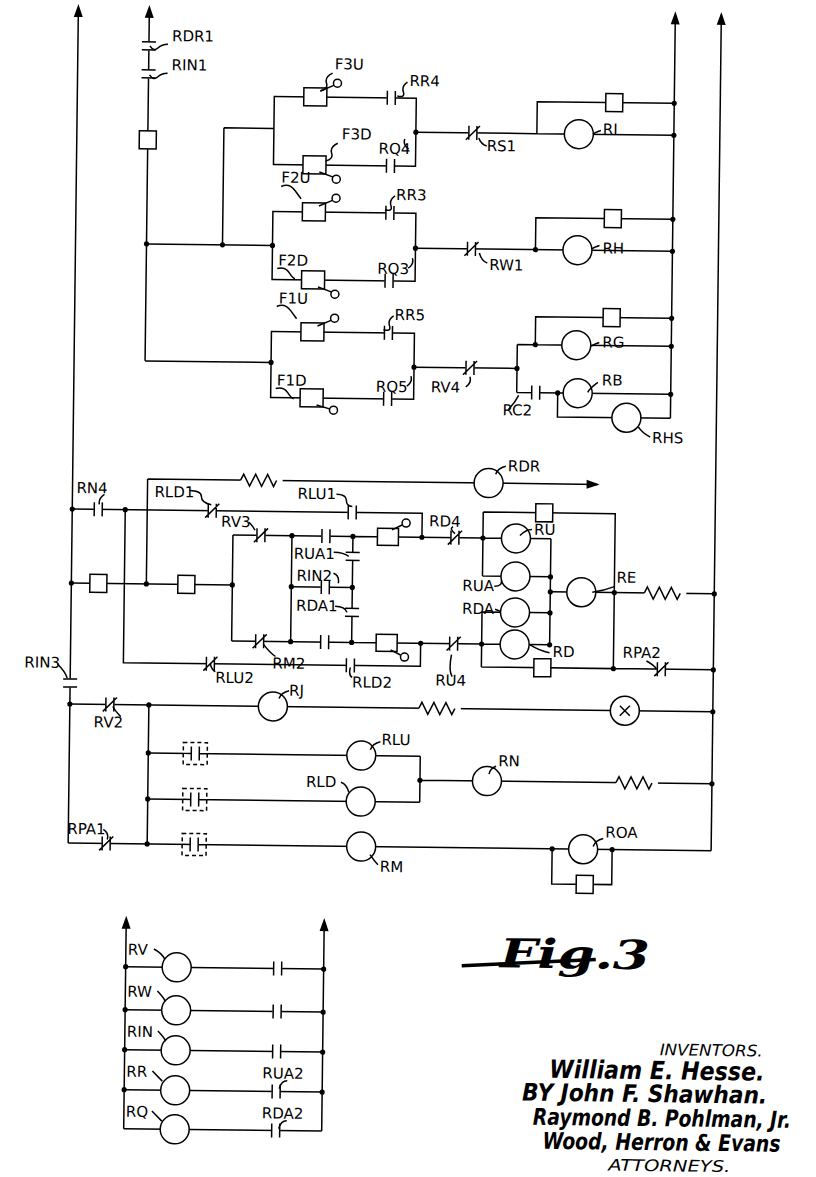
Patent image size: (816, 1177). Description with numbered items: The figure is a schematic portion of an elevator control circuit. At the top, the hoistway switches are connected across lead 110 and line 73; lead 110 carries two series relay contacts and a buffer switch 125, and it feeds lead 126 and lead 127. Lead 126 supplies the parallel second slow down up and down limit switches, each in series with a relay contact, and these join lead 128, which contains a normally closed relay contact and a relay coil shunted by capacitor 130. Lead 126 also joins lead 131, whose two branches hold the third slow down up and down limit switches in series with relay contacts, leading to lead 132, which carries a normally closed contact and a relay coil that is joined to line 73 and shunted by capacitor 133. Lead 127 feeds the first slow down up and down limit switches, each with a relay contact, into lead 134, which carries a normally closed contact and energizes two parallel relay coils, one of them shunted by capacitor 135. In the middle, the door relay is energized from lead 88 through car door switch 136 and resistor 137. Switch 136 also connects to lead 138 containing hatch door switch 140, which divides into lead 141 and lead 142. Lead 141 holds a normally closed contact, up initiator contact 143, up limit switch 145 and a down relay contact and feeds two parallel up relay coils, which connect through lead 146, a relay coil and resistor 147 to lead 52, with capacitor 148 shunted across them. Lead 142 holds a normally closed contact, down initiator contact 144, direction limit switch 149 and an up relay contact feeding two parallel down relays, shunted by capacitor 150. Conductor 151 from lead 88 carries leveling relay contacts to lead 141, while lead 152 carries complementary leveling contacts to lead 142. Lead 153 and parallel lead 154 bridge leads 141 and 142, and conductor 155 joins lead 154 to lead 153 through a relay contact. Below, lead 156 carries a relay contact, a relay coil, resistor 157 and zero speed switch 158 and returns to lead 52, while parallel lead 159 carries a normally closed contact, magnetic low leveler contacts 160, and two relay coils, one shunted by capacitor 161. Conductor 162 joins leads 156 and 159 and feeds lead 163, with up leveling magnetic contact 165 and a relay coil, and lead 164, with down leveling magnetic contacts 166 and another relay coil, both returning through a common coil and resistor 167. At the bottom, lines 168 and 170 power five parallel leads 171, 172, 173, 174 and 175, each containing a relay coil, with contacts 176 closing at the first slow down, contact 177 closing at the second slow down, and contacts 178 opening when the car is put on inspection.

The lead 88 is at (74, 28).
The lead 110 is at (144, 26).
The line 73 is at (670, 44).
The lead 52 is at (717, 40).
The buffer switch 125 is at (135, 142).
The lead 126 is at (187, 247).
The lead 127 is at (172, 364).
The lead 128 is at (434, 248).
The capacitor 130 is at (609, 208).
The lead 131 is at (248, 130).
The lead 132 is at (451, 131).
The capacitor 133 is at (610, 92).
The lead 134 is at (434, 367).
The capacitor 135 is at (610, 308).
The car door switch 136 is at (102, 578).
The resistor 137 is at (271, 481).
The lead 138 is at (179, 583).
The hatch door switch 140 is at (188, 596).
The lead 141 is at (236, 537).
The lead 142 is at (250, 636).
The up initiator contact 143 is at (324, 530).
The down initiator contact 144 is at (320, 642).
The up limit switch 145 is at (385, 546).
The lead 146 is at (552, 576).
The resistor 147 is at (670, 588).
The capacitor 148 is at (548, 509).
The direction limit switch 149 is at (388, 640).
The capacitor 150 is at (549, 678).
The conductor 151 is at (137, 509).
The lead 152 is at (168, 666).
The lead 153 is at (290, 560).
The parallel lead 154 is at (357, 612).
The conductor 155 is at (290, 589).
The lead 156 is at (99, 710).
The resistor 157 is at (454, 708).
The zero speed switch 158 is at (637, 704).
The lead 159 is at (125, 848).
The magnetic low leveler contacts 160 is at (203, 858).
The capacitor 161 is at (584, 894).
The conductor 162 is at (168, 770).
The lead 163 is at (164, 764).
The lead 164 is at (164, 809).
The up leveling magnetic contact 165 is at (205, 749).
The down leveling magnetic contact 166 is at (205, 796).
The resistor 167 is at (648, 778).
The line 168 is at (130, 948).
The line 170 is at (332, 951).
The lead 171 is at (216, 969).
The lead 172 is at (216, 1012).
The lead 173 is at (216, 1052).
The lead 174 is at (216, 1092).
The lead 175 is at (216, 1132).
The contacts 176 is at (284, 968).
The contact 177 is at (284, 1011).
The contacts 178 is at (284, 1051).